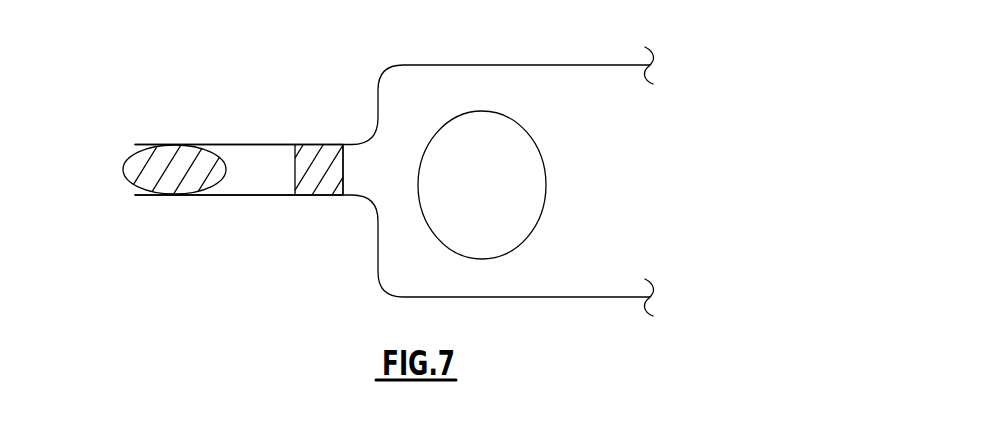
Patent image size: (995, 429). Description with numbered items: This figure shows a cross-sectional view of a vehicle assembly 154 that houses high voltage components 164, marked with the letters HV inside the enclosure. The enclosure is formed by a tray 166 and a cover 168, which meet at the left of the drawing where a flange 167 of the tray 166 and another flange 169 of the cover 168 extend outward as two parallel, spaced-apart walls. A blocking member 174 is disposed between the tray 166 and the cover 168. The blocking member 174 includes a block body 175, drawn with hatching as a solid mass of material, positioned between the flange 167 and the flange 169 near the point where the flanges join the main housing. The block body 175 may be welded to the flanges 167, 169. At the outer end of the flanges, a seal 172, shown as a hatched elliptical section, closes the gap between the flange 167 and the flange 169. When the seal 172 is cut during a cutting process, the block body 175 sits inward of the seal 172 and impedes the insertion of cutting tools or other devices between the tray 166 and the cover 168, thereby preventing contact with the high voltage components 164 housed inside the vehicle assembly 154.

The vehicle assembly 154 is at (310, 69).
The high voltage components 164 is at (533, 137).
The tray 166 is at (377, 252).
The flange 167 is at (182, 195).
The cover 168 is at (386, 73).
The flange 169 is at (143, 144).
The seal 172 is at (143, 172).
The blocking member 174 is at (307, 122).
The block body 175 is at (306, 196).